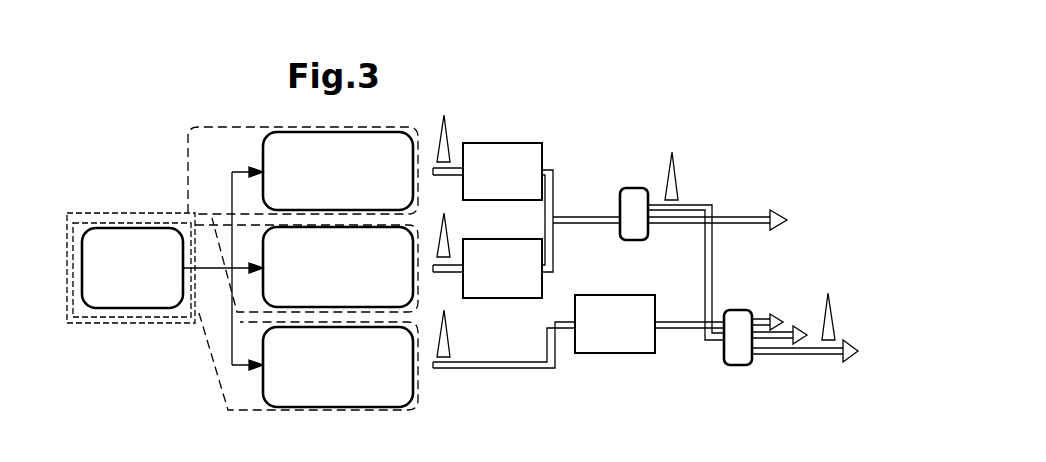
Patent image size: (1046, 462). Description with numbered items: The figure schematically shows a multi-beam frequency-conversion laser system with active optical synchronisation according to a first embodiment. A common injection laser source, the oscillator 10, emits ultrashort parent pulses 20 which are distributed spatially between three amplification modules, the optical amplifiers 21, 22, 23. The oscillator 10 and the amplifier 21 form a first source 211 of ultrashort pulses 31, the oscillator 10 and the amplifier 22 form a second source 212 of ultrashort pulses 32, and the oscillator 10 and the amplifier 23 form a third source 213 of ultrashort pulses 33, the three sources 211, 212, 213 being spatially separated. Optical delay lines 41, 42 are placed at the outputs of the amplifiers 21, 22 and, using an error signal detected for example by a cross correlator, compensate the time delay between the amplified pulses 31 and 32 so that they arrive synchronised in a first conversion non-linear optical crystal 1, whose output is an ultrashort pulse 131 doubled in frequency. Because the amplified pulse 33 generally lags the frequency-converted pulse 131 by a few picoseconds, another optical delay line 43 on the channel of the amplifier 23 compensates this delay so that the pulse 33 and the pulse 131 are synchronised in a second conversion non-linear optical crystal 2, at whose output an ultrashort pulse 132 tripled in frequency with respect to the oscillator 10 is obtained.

The first conversion non-linear optical crystal 1 is at (638, 187).
The second conversion non-linear optical crystal 2 is at (738, 366).
The oscillator 10 is at (148, 279).
The ultrashort parent pulses 20 is at (218, 272).
The optical amplifier 21 is at (352, 182).
The optical amplifier 22 is at (352, 278).
The optical amplifier 23 is at (352, 378).
The ultrashort pulses 31 is at (446, 130).
The ultrashort pulses 32 is at (445, 232).
The ultrashort pulses 33 is at (450, 342).
The optical delay line 41 is at (518, 184).
The optical delay line 42 is at (518, 281).
The optical delay line 43 is at (630, 337).
The frequency-converted ultrashort pulse 131 is at (677, 172).
The frequency-tripled ultrashort pulse 132 is at (832, 316).
The first source 211 is at (187, 150).
The second source 212 is at (118, 212).
The third source 213 is at (216, 378).